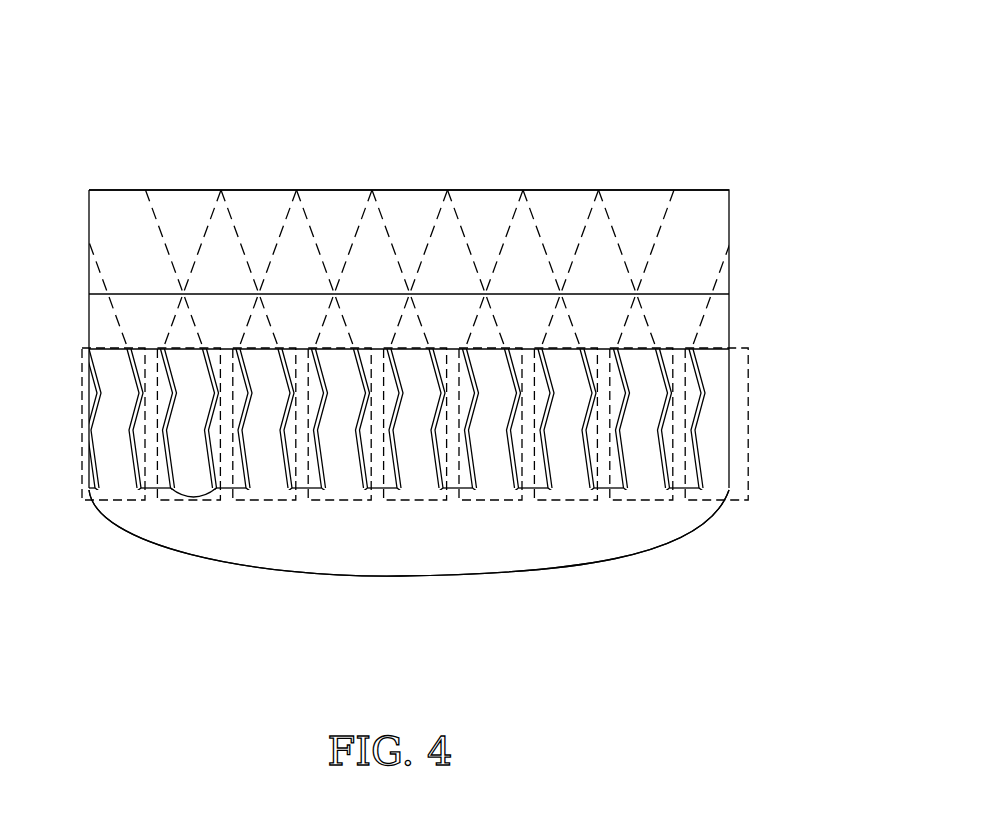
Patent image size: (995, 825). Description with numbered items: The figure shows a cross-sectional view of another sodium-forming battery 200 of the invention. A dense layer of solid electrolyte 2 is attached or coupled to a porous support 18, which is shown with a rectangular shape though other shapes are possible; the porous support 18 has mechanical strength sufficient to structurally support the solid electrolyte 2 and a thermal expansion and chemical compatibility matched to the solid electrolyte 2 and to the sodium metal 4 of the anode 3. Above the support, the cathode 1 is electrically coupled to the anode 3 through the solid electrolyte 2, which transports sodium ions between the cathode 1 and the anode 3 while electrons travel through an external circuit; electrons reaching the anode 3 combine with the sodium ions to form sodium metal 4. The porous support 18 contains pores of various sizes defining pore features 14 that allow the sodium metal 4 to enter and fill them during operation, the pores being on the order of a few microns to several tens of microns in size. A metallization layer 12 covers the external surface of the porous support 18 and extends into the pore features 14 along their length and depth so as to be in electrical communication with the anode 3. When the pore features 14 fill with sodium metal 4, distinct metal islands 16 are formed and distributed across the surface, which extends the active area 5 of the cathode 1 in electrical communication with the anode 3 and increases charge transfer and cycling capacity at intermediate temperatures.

The sodium-forming battery 200 is at (146, 84).
The cathode 1 is at (89, 227).
The solid electrolyte 2 is at (89, 325).
The anode 3 is at (678, 569).
The sodium metal 4 is at (398, 554).
The active area 5 is at (728, 173).
The metallization layer 12 is at (396, 464).
The pore features 14 is at (82, 445).
The metal islands 16 is at (155, 541).
The porous support 18 is at (753, 349).